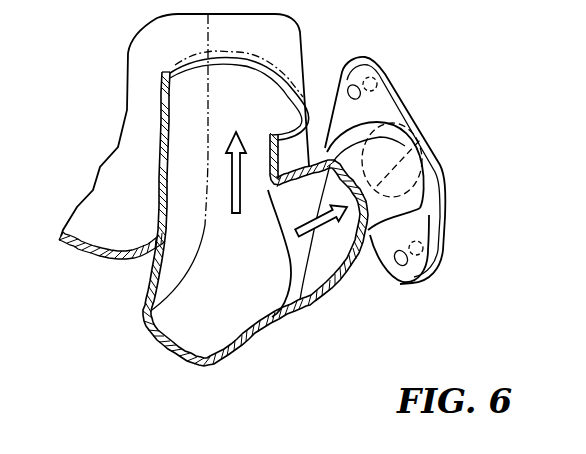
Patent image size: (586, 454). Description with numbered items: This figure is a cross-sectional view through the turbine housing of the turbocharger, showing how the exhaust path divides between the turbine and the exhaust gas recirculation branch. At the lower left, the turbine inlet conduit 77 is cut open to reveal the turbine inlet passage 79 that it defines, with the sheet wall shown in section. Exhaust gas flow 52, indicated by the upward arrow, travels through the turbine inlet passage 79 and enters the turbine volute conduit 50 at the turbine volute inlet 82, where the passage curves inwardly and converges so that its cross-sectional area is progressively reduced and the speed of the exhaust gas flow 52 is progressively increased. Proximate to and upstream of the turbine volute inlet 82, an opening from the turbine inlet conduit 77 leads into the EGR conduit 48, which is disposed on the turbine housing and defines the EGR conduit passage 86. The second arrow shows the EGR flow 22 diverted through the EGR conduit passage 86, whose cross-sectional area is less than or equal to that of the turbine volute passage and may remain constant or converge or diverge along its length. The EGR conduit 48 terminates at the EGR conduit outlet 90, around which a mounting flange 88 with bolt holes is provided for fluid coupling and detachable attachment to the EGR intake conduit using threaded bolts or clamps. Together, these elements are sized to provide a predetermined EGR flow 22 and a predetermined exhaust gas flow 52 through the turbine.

The turbine volute conduit 50 is at (163, 140).
The exhaust gas flow 52 is at (228, 185).
The turbine volute inlet 82 is at (268, 77).
The EGR flow 22 is at (337, 128).
The EGR conduit outlet 90 is at (427, 131).
The mounting flange 88 is at (437, 227).
The EGR conduit passage 86 is at (337, 250).
The EGR conduit 48 is at (337, 250).
The turbine inlet conduit 77 is at (245, 338).
The turbine inlet passage 79 is at (203, 338).